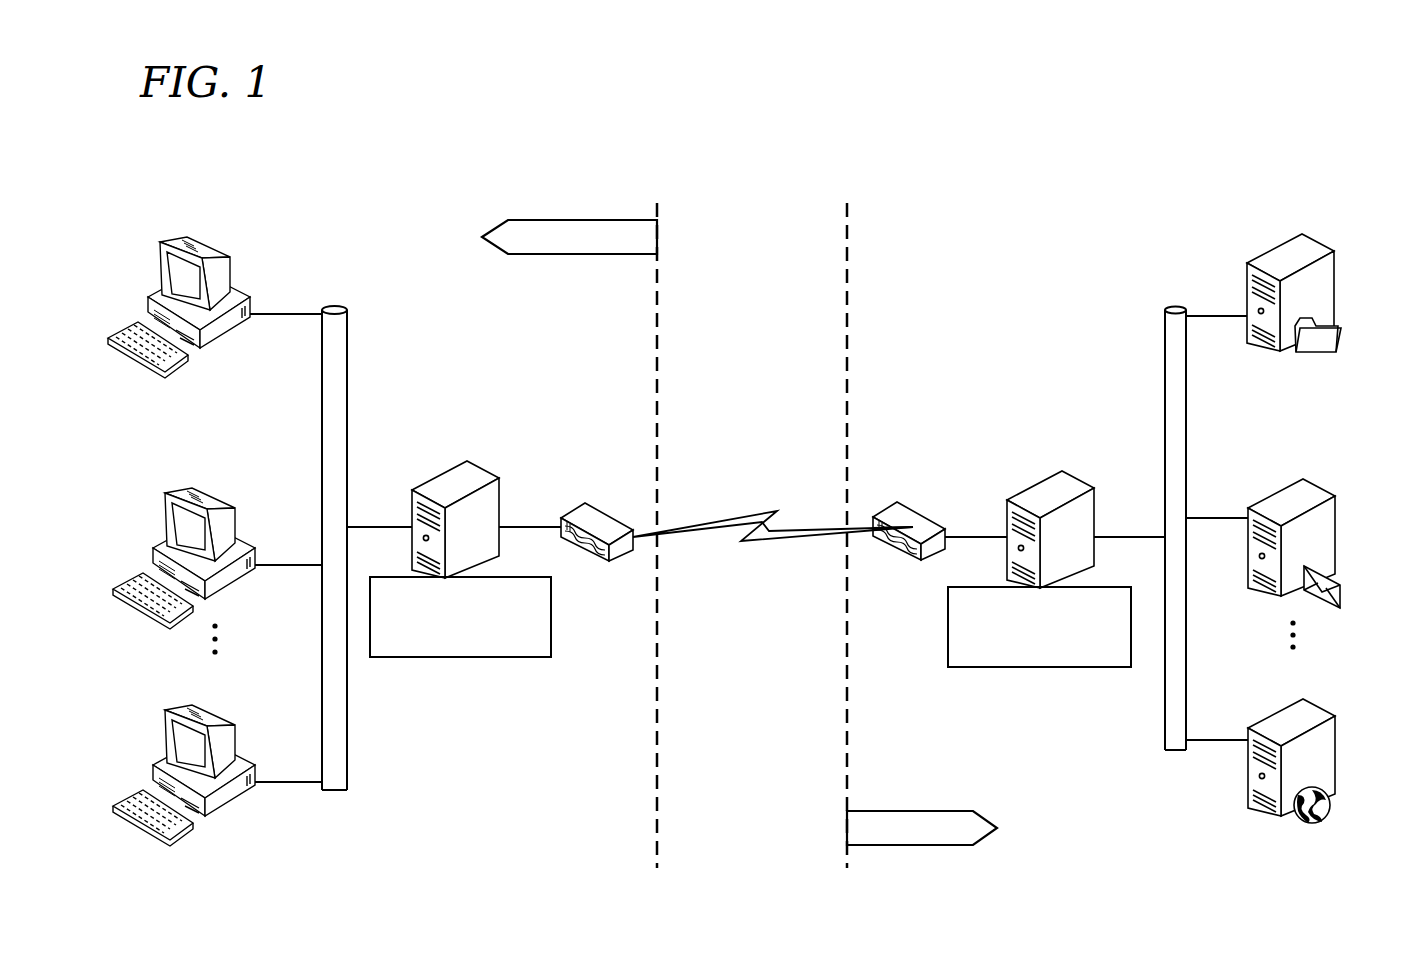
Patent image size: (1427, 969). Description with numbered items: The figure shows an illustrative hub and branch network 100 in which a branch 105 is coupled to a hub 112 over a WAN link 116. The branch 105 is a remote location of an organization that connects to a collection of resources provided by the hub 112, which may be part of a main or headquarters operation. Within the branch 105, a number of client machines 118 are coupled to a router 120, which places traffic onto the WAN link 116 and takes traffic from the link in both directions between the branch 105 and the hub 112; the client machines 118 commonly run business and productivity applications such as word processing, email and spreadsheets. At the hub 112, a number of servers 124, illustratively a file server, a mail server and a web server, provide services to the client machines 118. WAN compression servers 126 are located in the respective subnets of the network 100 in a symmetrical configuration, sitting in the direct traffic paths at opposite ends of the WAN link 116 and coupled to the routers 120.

The hub and branch network 100 is at (774, 139).
The branch 105 is at (574, 218).
The hub 112 is at (927, 810).
The WAN link 116 is at (760, 511).
The client machines 118 is at (236, 280).
The router 120 is at (913, 508).
The servers 124 is at (1338, 273).
The WAN compression servers 126 is at (1034, 475).